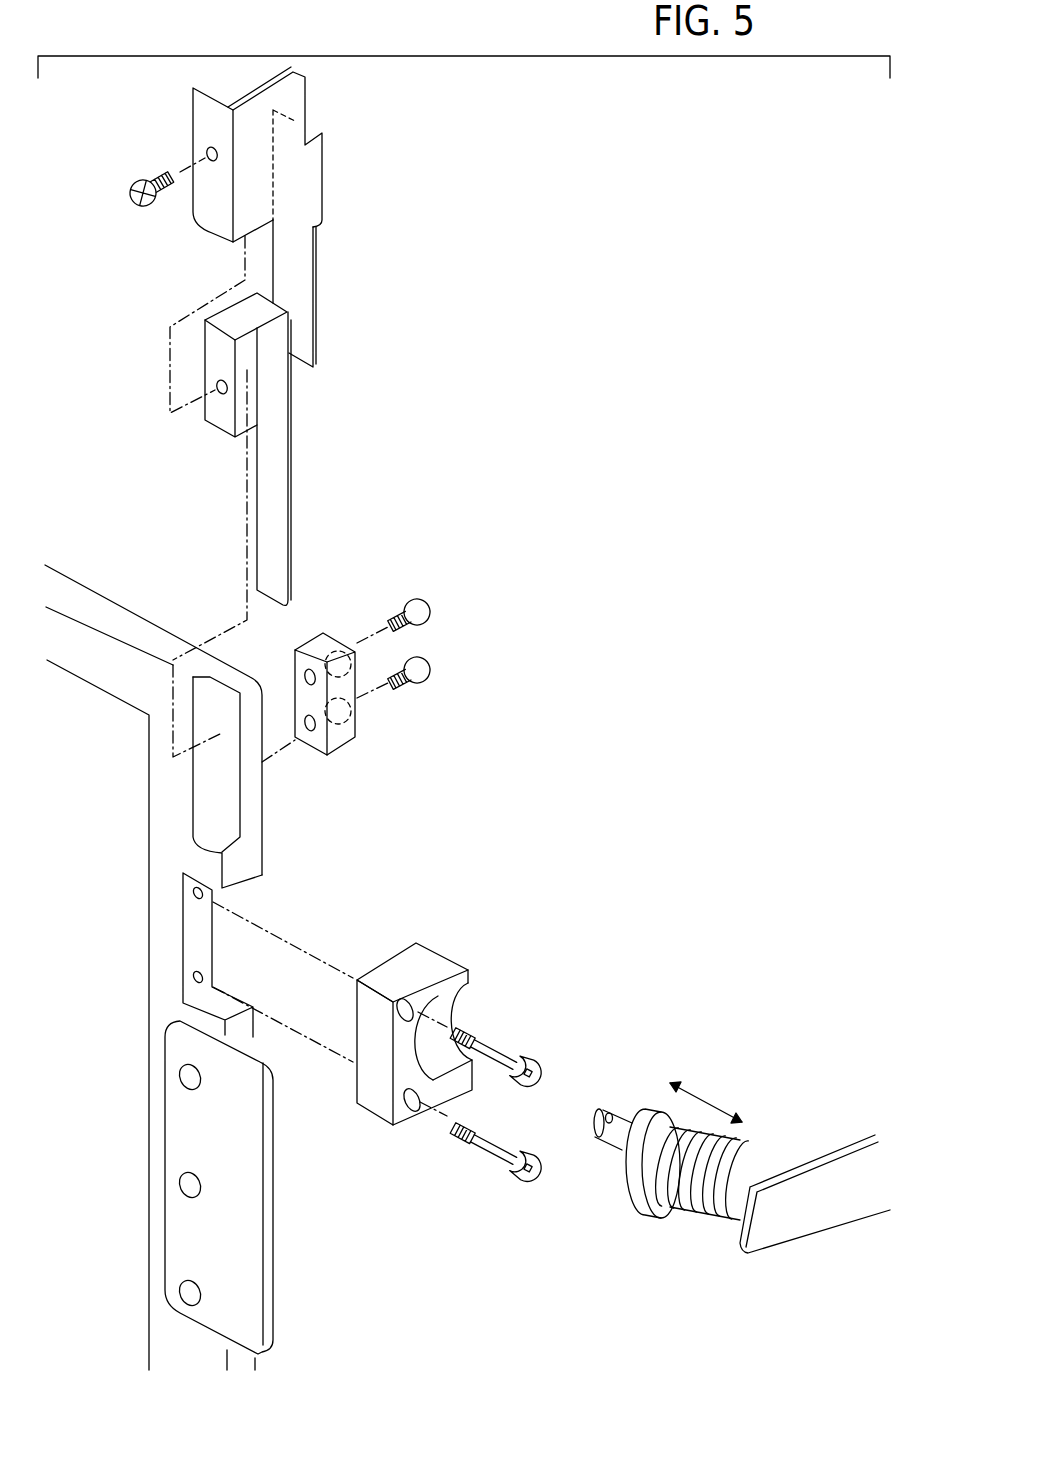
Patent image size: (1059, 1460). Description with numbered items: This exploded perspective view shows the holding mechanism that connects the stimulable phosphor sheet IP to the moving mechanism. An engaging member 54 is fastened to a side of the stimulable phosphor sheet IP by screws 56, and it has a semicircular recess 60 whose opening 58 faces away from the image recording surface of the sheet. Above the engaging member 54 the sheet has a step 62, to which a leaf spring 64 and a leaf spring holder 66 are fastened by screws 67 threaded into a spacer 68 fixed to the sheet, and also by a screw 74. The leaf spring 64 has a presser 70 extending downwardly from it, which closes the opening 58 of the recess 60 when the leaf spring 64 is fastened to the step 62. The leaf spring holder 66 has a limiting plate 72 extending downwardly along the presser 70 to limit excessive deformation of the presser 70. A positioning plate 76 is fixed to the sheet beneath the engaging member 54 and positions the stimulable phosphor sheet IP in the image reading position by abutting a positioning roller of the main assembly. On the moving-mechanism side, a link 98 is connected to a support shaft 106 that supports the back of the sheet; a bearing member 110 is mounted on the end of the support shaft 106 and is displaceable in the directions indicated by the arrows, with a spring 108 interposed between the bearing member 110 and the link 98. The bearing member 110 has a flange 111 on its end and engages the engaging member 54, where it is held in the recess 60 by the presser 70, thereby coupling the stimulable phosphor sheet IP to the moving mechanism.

The stimulable phosphor sheet IP is at (185, 638).
The leaf spring holder 66 is at (297, 103).
The screw 74 is at (128, 204).
The limiting plate 72 is at (303, 243).
The leaf spring 64 is at (222, 350).
The presser 70 is at (275, 413).
The step 62 is at (228, 800).
The spacer 68 is at (348, 732).
The screw 67 is at (427, 604).
The engaging member 54 is at (434, 1013).
The semicircular recess 60 is at (452, 1000).
The opening 58 is at (447, 1017).
The screw 56 is at (528, 1058).
The positioning plate 76 is at (263, 1212).
The link 98 is at (782, 1192).
The spring 108 is at (717, 1218).
The flange 111 is at (655, 1203).
The bearing member 110 is at (632, 1183).
The support shaft 106 is at (627, 1122).